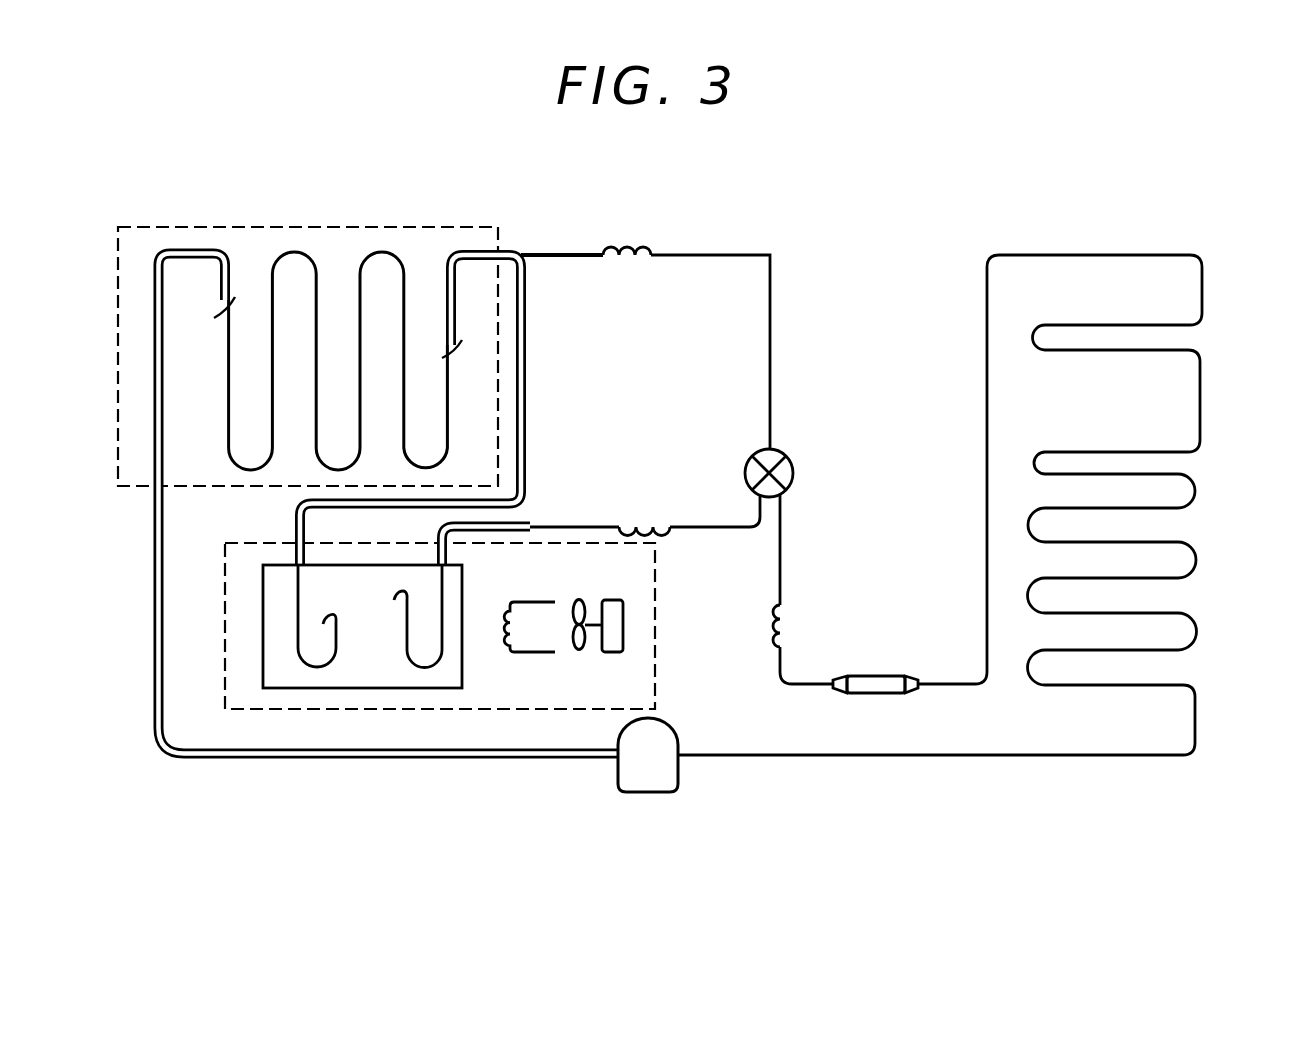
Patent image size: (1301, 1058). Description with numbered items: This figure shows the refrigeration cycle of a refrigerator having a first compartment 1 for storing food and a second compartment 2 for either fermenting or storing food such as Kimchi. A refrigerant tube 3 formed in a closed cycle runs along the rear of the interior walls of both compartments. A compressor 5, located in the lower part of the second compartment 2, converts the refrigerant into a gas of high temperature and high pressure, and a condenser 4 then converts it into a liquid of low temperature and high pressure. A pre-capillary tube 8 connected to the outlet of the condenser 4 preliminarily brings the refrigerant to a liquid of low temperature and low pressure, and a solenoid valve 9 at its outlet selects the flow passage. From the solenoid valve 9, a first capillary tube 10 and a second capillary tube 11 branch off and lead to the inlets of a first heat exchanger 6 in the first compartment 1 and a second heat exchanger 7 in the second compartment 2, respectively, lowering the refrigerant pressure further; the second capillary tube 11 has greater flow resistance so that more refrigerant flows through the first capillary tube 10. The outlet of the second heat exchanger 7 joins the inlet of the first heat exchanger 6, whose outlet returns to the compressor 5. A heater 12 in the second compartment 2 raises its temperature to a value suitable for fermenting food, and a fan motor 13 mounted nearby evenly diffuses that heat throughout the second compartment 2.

The first compartment 1 is at (172, 222).
The second compartment 2 is at (221, 586).
The refrigerant tube 3 is at (980, 458).
The condenser 4 is at (1193, 398).
The compressor 5 is at (650, 793).
The first heat exchanger 6 is at (388, 252).
The second heat exchanger 7 is at (307, 667).
The pre-capillary tube 8 is at (782, 618).
The solenoid valve 9 is at (788, 462).
The first capillary tube 10 is at (612, 250).
The second capillary tube 11 is at (630, 518).
The heater 12 is at (503, 642).
The fan motor 13 is at (613, 645).